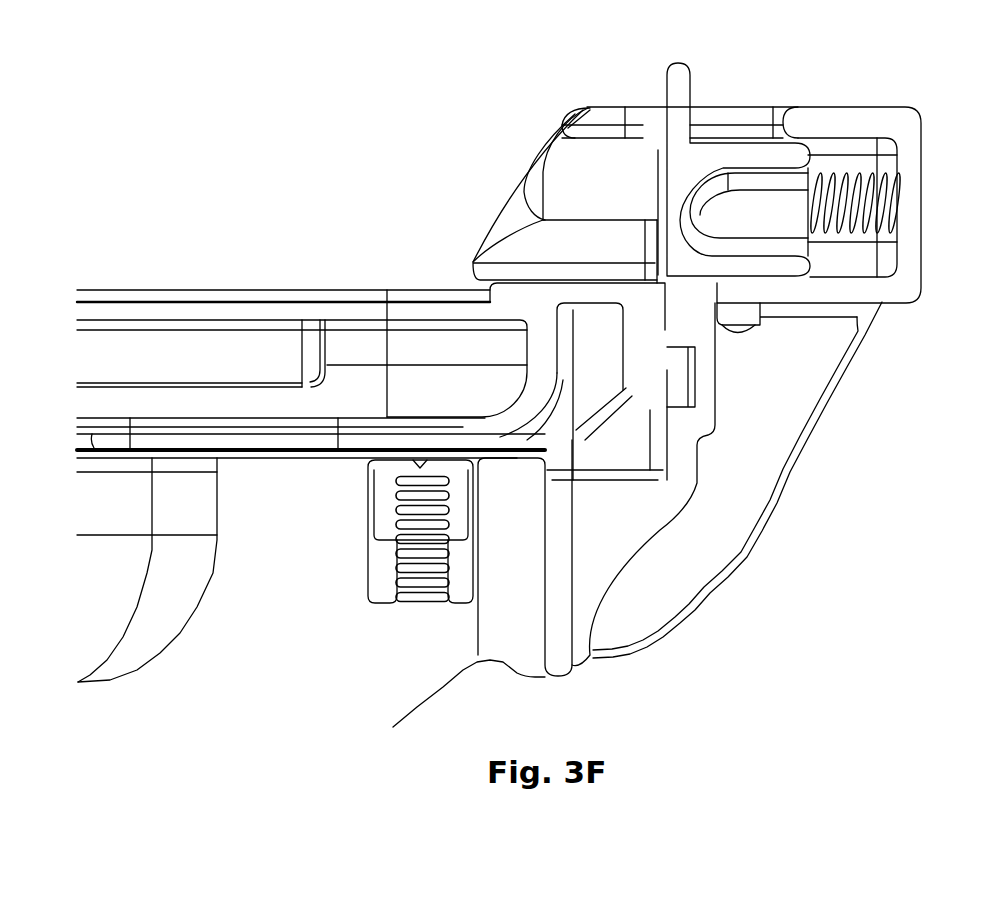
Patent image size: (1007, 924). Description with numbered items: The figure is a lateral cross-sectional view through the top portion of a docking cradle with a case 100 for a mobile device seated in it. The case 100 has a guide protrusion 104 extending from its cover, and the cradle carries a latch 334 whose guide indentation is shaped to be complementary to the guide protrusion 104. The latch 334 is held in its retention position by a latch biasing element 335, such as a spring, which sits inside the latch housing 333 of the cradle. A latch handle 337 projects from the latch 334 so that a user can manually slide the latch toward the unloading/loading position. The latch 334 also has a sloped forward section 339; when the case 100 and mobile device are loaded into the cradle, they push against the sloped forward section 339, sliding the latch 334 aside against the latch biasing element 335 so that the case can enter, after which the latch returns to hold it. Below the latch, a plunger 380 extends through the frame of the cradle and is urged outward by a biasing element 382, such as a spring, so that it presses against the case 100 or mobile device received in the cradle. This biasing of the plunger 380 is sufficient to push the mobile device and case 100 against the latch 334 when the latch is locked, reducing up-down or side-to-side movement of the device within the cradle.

The case 100 is at (284, 293).
The guide protrusion 104 is at (632, 298).
The latch housing 333 is at (832, 107).
The latch 334 is at (541, 152).
The latch biasing element 335 is at (876, 186).
The latch handle 337 is at (668, 70).
The sloped forward section 339 is at (490, 217).
The plunger 380 is at (460, 515).
The biasing element 382 is at (450, 563).